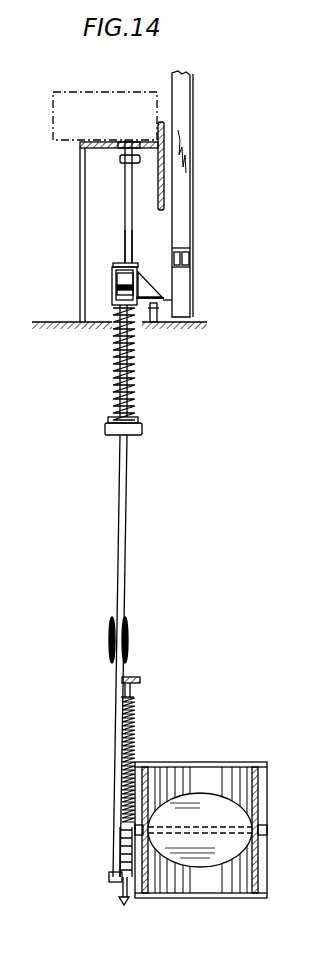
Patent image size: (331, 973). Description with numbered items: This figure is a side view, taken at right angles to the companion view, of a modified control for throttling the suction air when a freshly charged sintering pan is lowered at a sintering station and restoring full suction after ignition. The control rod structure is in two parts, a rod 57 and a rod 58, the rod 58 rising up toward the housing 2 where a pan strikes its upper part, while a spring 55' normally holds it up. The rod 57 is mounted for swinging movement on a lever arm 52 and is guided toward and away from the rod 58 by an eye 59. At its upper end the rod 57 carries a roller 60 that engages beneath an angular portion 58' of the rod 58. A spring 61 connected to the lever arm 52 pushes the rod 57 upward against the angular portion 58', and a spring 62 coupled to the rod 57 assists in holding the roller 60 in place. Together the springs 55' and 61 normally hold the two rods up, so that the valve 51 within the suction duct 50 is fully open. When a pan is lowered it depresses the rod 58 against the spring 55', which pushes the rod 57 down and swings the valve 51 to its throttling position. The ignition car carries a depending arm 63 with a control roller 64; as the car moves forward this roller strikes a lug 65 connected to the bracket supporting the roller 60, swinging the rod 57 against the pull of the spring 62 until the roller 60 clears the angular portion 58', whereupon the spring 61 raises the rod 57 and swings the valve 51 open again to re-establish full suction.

The housing 2 is at (52, 117).
The tank 50 is at (255, 790).
The valve 51 is at (235, 852).
The lever arm 52 is at (125, 906).
The spring 55' is at (148, 362).
The rod 57 is at (119, 528).
The rod 58 is at (116, 201).
The angular portion 58' is at (112, 245).
The eye 59 is at (105, 433).
The roller 60 is at (113, 268).
The spring 61 is at (135, 733).
The spring 62 is at (128, 642).
The depending arm 63 is at (186, 200).
The control roller 64 is at (155, 326).
The lug 65 is at (150, 292).